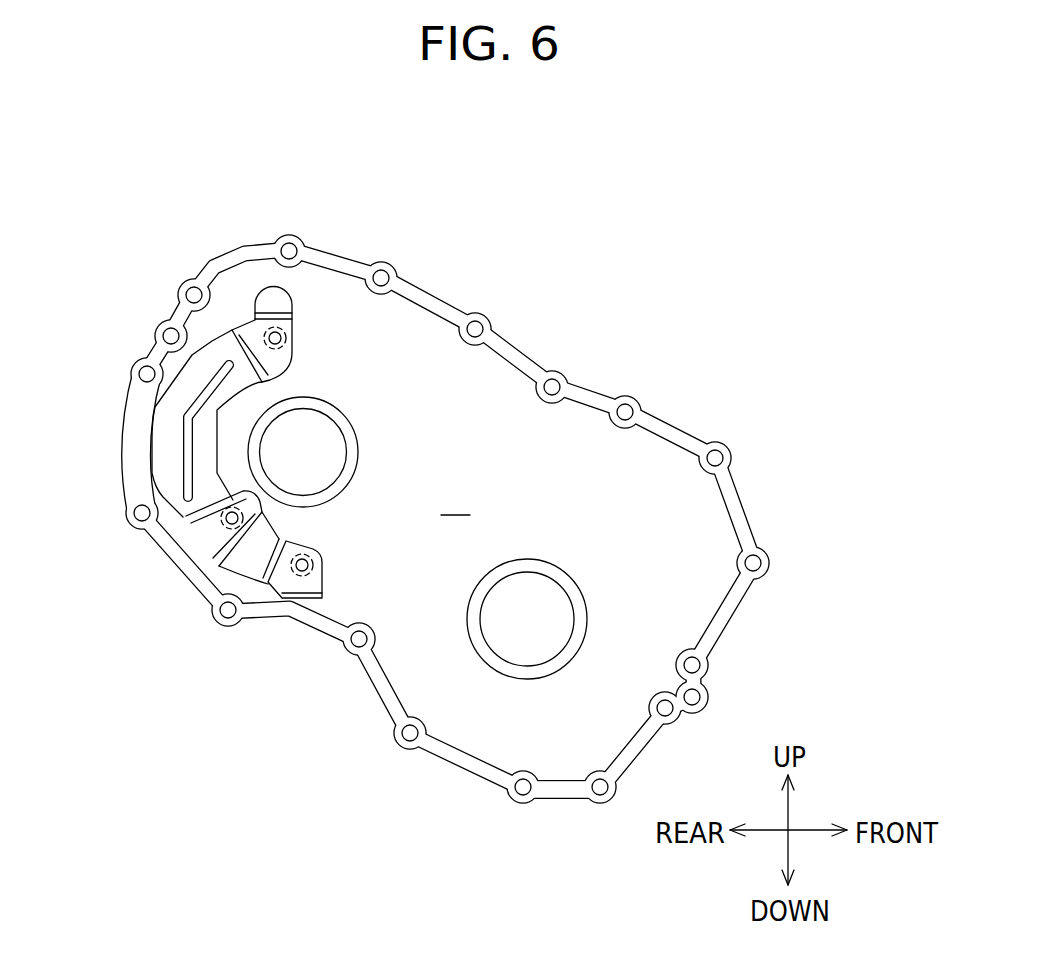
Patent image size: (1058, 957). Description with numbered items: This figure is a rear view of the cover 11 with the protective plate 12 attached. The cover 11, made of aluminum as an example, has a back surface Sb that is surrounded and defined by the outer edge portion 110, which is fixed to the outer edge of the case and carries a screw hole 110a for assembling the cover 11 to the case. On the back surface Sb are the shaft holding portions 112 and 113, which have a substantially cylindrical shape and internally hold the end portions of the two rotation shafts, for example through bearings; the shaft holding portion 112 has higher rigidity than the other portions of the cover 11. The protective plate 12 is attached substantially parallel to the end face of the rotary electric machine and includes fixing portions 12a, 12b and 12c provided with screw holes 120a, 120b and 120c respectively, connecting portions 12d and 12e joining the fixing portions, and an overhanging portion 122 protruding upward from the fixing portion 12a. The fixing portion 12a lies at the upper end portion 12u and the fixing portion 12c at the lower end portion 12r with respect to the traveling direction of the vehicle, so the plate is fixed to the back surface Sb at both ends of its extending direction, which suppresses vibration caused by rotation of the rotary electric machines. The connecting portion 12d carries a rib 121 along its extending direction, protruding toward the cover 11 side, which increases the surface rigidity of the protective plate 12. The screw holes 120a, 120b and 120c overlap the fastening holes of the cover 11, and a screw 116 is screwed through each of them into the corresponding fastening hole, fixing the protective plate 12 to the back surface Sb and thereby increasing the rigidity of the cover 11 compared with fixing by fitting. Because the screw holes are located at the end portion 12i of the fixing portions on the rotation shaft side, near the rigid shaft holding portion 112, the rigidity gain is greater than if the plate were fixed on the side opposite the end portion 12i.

The cover 11 is at (468, 511).
The outer edge portion 110 is at (503, 348).
The screw hole 110a is at (483, 316).
The shaft holding portion 112 is at (345, 426).
The shaft holding portion 113 is at (560, 566).
The protective plate 12 is at (251, 461).
The fixing portion 12a is at (330, 345).
The fixing portion 12b is at (212, 545).
The fixing portion 12c is at (313, 603).
The connecting portion 12d is at (158, 416).
The connecting portion 12e is at (227, 570).
The end portion 12i is at (283, 377).
The lower end portion 12r is at (328, 583).
The upper end portion 12u is at (300, 316).
The screw 116 is at (265, 330).
The screw hole 120a is at (232, 330).
The screw hole 120b is at (186, 520).
The screw hole 120c is at (283, 605).
The rib 121 is at (183, 441).
The overhanging portion 122 is at (270, 288).
The back surface Sb is at (455, 499).